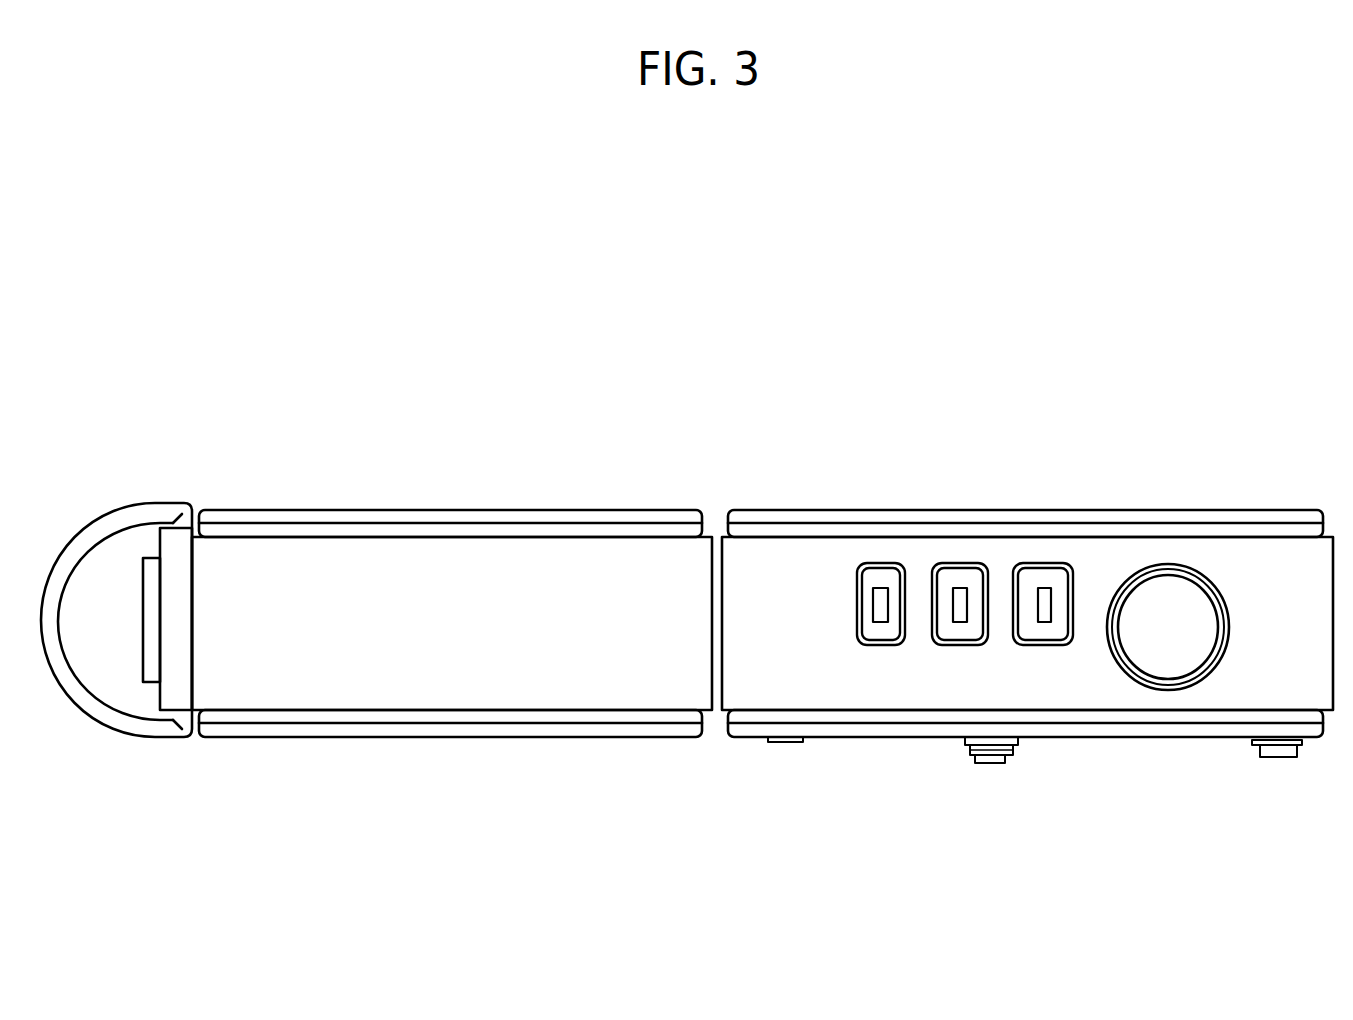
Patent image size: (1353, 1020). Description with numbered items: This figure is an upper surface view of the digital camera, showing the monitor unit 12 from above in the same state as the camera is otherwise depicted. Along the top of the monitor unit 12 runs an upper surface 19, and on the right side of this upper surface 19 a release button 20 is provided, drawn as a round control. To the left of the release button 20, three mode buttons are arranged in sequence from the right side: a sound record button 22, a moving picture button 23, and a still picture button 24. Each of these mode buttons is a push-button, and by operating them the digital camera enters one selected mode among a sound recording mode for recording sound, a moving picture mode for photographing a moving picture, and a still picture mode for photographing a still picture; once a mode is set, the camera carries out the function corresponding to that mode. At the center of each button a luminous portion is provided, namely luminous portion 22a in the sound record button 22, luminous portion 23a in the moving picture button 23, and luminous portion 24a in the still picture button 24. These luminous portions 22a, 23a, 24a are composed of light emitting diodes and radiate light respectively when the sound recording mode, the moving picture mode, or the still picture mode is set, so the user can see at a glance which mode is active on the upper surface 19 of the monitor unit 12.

The monitor unit 12 is at (1275, 497).
The upper surface 19 is at (797, 565).
The release button 20 is at (1168, 597).
The sound record button 22 is at (1040, 560).
The luminous portion 22a is at (1043, 608).
The moving picture button 23 is at (958, 560).
The luminous portion 23a is at (958, 608).
The still picture button 24 is at (877, 560).
The luminous portion 24a is at (880, 608).